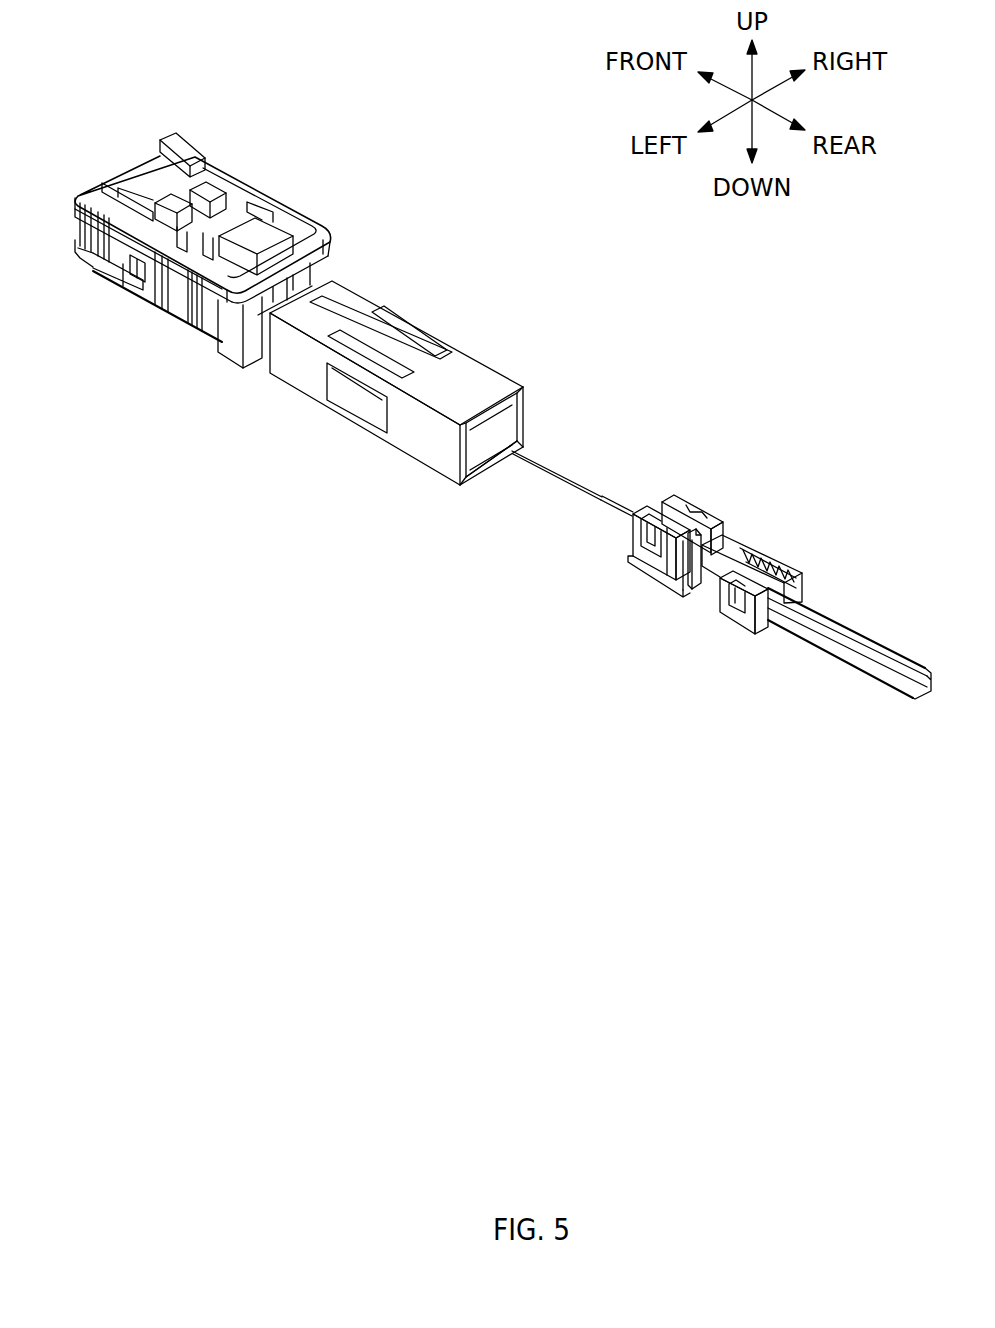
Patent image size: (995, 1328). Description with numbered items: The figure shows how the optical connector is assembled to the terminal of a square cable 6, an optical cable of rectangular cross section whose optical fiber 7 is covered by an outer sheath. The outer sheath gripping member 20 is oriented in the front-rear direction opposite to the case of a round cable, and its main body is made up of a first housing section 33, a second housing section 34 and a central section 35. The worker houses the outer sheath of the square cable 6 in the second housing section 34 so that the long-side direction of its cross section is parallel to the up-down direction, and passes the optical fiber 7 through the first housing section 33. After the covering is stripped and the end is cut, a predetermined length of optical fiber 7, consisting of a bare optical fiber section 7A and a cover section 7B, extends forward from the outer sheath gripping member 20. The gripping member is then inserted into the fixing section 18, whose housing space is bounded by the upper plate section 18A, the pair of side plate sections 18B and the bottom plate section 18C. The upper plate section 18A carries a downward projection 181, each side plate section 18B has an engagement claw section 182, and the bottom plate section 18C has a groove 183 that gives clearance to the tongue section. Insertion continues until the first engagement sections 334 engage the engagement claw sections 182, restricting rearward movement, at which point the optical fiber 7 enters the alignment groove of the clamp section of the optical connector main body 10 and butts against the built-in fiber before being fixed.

The optical connector main body 10 is at (416, 195).
The outer sheath gripping member 20 is at (806, 446).
The fixing section 18 is at (478, 372).
The upper plate section 18A is at (478, 383).
The side plate section 18B is at (533, 412).
The bottom plate section 18C is at (464, 478).
The projection 181 is at (526, 418).
The engagement claw section 182 is at (376, 430).
The groove 183 is at (493, 465).
The optical fiber 7 is at (687, 420).
The bare optical fiber section 7A is at (523, 458).
The cover section 7B is at (607, 497).
The first housing section 33 is at (693, 506).
The first engagement section 334 is at (657, 588).
The central section 35 is at (735, 531).
The second housing section 34 is at (777, 551).
The square cable 6 is at (845, 625).